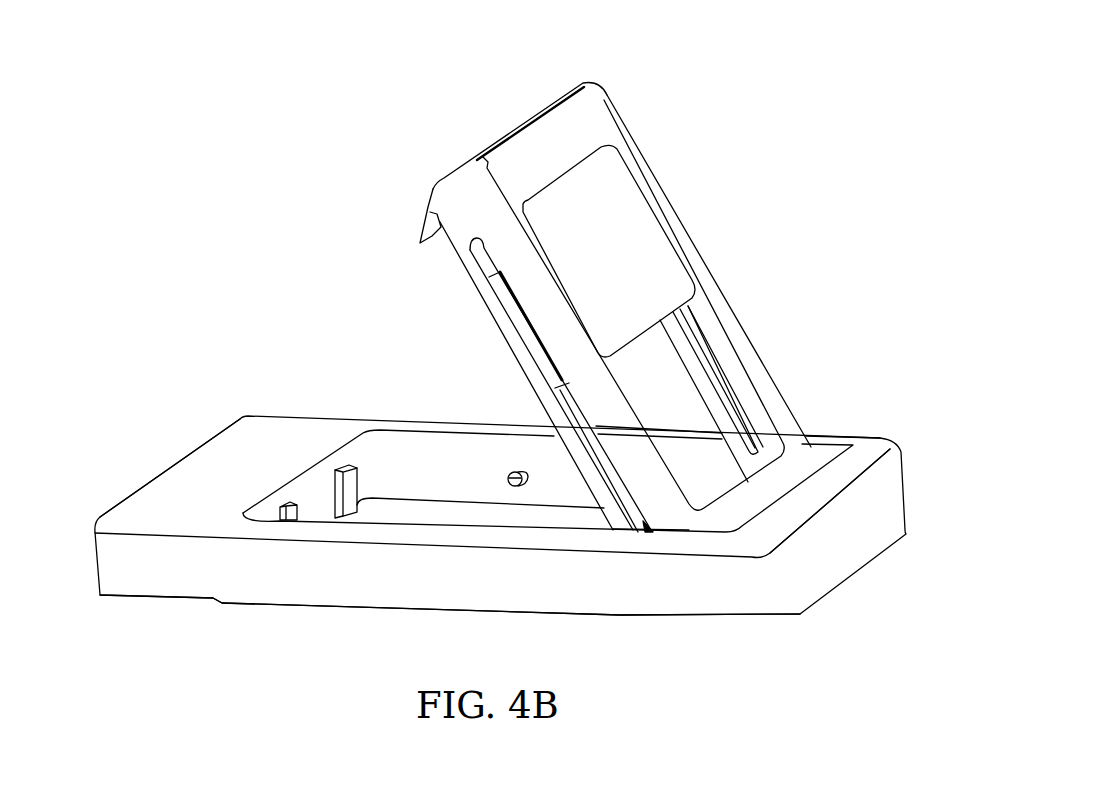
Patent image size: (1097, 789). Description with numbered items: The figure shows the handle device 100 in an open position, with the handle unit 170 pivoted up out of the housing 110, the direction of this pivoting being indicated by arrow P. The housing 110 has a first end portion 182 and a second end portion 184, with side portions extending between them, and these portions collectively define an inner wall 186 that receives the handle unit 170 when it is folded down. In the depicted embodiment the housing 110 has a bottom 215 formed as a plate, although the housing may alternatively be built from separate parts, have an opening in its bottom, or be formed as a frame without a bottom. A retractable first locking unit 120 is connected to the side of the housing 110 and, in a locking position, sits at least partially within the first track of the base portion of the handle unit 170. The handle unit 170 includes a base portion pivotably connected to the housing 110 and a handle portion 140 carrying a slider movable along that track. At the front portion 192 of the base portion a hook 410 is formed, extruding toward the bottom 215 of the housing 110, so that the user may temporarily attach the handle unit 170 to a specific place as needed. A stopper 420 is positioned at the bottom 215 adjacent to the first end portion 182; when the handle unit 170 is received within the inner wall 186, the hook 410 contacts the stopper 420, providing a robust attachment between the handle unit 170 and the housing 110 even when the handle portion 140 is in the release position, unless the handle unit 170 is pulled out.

The handle device 100 is at (730, 115).
The housing 110 is at (825, 560).
The first locking unit 120 is at (509, 478).
The handle portion 140 is at (603, 207).
The handle unit 170 is at (688, 238).
The first end portion 182 is at (225, 481).
The second end portion 184 is at (873, 458).
The inner wall 186 is at (482, 453).
The front portion 192 is at (462, 193).
The bottom 215 is at (372, 583).
The hook 410 is at (424, 232).
The stopper 420 is at (340, 467).
The pivot direction P is at (177, 238).